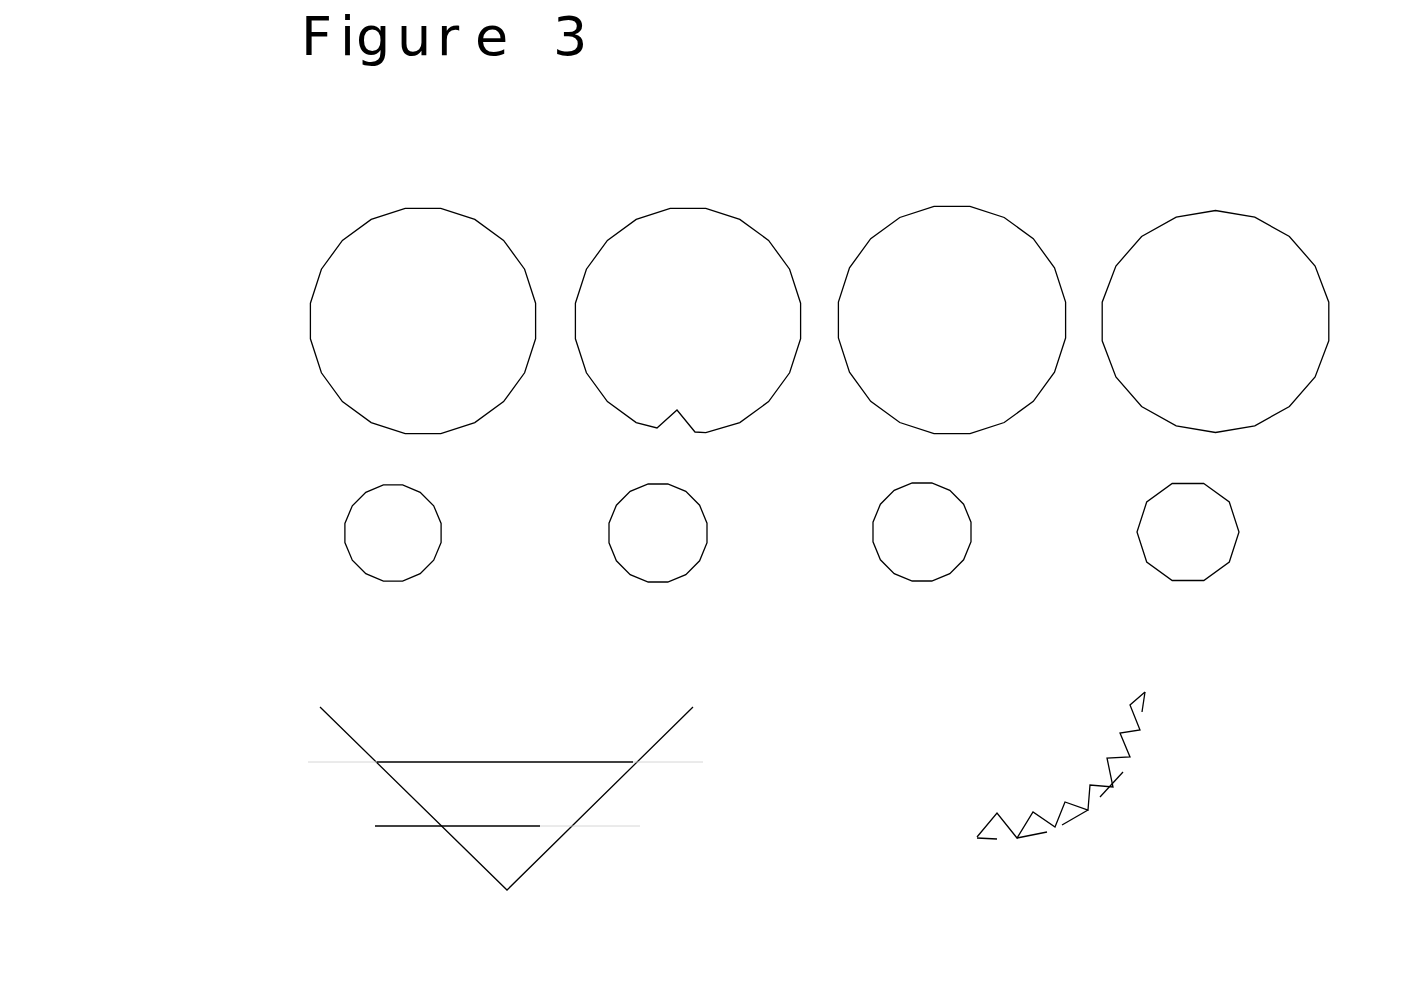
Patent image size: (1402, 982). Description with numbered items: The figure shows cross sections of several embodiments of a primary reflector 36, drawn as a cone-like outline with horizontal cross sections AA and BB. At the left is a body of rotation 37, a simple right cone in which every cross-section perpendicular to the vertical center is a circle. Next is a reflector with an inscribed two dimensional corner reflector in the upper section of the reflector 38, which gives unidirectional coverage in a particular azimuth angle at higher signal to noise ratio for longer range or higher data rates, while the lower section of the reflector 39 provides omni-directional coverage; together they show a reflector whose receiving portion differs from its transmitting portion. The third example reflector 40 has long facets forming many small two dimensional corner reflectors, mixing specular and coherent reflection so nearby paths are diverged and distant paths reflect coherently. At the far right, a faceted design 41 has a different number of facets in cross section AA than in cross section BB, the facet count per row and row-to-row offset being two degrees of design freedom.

The primary reflector 36 is at (343, 723).
The body of rotation 37 is at (355, 497).
The upper section of the reflector 38 is at (608, 217).
The lower section of the reflector 39 is at (615, 562).
The third example reflector 40 is at (873, 387).
The faceted design 41 is at (1322, 367).